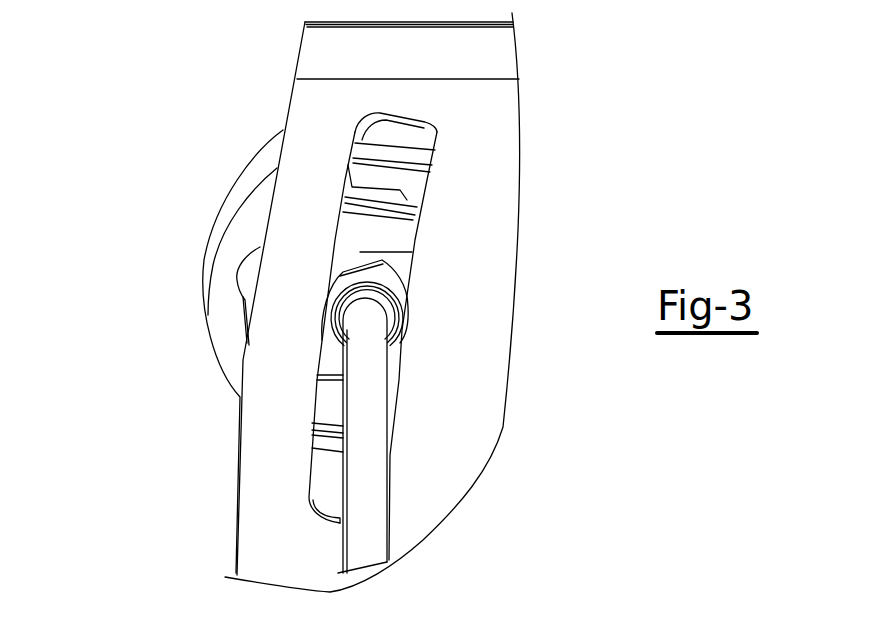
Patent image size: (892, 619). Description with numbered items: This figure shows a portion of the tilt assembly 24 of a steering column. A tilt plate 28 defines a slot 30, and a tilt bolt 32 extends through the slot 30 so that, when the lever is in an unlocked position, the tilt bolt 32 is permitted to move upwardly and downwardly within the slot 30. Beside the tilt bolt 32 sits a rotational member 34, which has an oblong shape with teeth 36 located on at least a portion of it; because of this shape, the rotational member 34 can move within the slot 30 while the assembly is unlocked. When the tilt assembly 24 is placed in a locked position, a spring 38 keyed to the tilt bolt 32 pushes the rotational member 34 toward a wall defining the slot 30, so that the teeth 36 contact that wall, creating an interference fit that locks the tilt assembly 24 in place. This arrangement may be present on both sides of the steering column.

The tilt assembly 24 is at (100, 133).
The tilt plate 28 is at (477, 200).
The slot 30 is at (423, 138).
The tilt bolt 32 is at (372, 432).
The rotational member 34 is at (362, 283).
The teeth 36 is at (403, 290).
The spring 38 is at (326, 326).